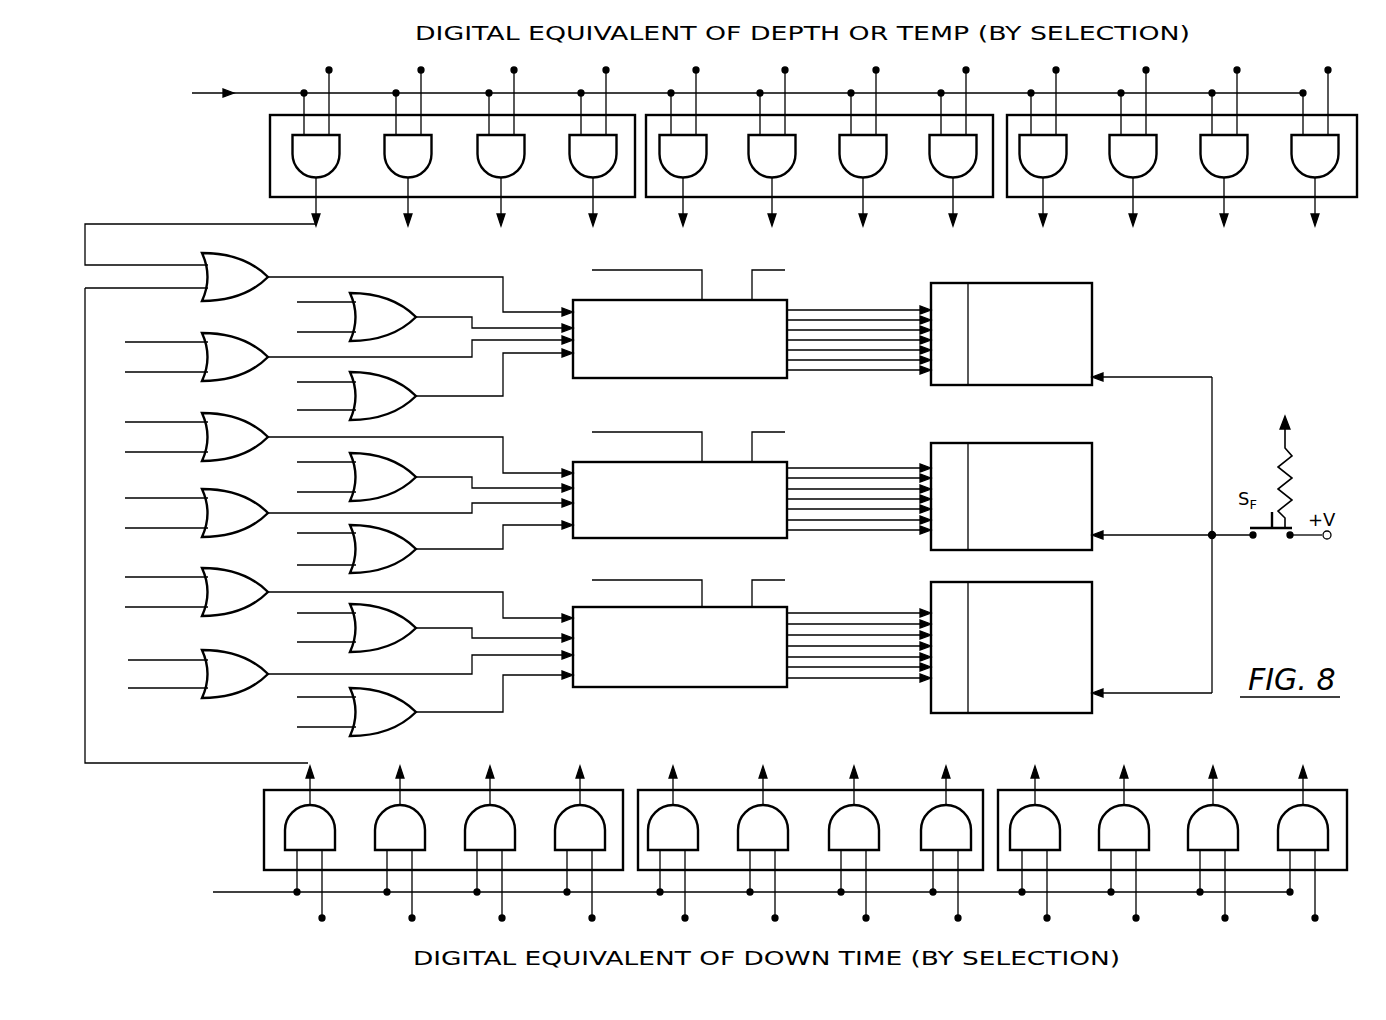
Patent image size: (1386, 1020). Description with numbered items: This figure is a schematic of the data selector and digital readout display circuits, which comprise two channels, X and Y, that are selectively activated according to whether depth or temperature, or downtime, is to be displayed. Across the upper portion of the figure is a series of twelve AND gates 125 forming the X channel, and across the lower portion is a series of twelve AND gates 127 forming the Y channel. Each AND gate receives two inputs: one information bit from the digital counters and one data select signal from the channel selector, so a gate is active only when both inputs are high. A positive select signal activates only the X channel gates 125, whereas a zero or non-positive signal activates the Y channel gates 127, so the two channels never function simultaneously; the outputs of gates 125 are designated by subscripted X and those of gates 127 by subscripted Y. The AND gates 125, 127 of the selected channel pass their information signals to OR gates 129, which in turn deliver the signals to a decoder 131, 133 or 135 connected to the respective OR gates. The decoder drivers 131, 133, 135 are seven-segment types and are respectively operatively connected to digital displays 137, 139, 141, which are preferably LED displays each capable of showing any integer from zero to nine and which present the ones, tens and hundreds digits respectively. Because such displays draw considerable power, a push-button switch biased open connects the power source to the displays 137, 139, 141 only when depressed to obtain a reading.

The AND gates 125 is at (292, 153).
The AND gates 127 is at (285, 836).
The OR gates 129 is at (362, 298).
The decoder 131 is at (750, 364).
The decoder 133 is at (752, 526).
The decoder 135 is at (752, 674).
The digital display 137 is at (1073, 382).
The digital display 139 is at (1076, 544).
The digital display 141 is at (1078, 704).